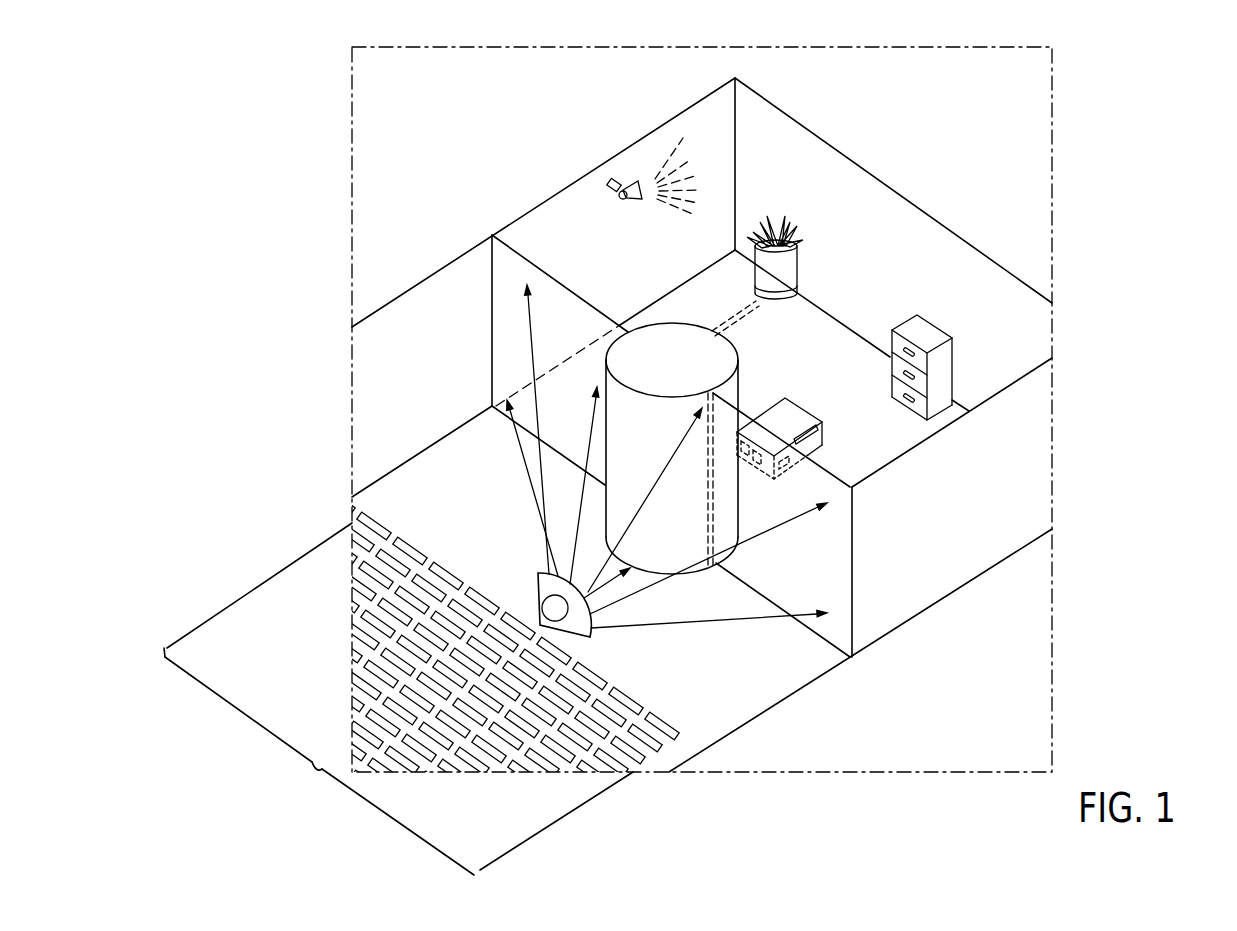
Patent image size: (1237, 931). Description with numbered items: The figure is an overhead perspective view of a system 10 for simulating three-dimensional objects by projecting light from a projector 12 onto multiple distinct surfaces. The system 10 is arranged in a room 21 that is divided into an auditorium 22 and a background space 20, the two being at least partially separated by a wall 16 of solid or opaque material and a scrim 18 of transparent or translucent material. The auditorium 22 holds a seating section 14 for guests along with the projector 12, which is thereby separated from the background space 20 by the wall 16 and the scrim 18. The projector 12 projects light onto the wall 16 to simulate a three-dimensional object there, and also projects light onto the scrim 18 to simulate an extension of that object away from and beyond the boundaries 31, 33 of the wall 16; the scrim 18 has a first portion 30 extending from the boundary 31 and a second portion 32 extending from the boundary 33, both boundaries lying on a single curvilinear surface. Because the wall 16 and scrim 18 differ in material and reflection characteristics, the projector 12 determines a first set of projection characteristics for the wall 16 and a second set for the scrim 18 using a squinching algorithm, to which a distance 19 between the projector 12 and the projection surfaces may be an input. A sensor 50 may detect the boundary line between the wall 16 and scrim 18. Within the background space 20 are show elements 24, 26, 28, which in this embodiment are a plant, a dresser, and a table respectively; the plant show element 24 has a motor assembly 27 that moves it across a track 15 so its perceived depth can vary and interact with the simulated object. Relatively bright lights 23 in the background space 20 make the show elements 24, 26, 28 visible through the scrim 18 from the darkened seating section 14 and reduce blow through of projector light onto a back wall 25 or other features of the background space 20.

The system 10 is at (518, 172).
The projector 12 is at (583, 633).
The seating section 14 is at (421, 681).
The track 15 is at (747, 313).
The wall 16 is at (697, 363).
The scrim 18 is at (593, 310).
The distance 19 is at (588, 592).
The background space 20 is at (881, 214).
The room 21 is at (612, 155).
The auditorium 22 is at (374, 438).
The lights 23 is at (612, 195).
The show element 24 is at (788, 268).
The back wall 25 is at (827, 170).
The show element 26 is at (920, 328).
The motor assembly 27 is at (755, 290).
The show element 28 is at (792, 413).
The first portion 30 is at (558, 298).
The boundary 31 is at (628, 322).
The second portion 32 is at (817, 490).
The boundary 33 is at (702, 478).
The sensor 50 is at (537, 588).